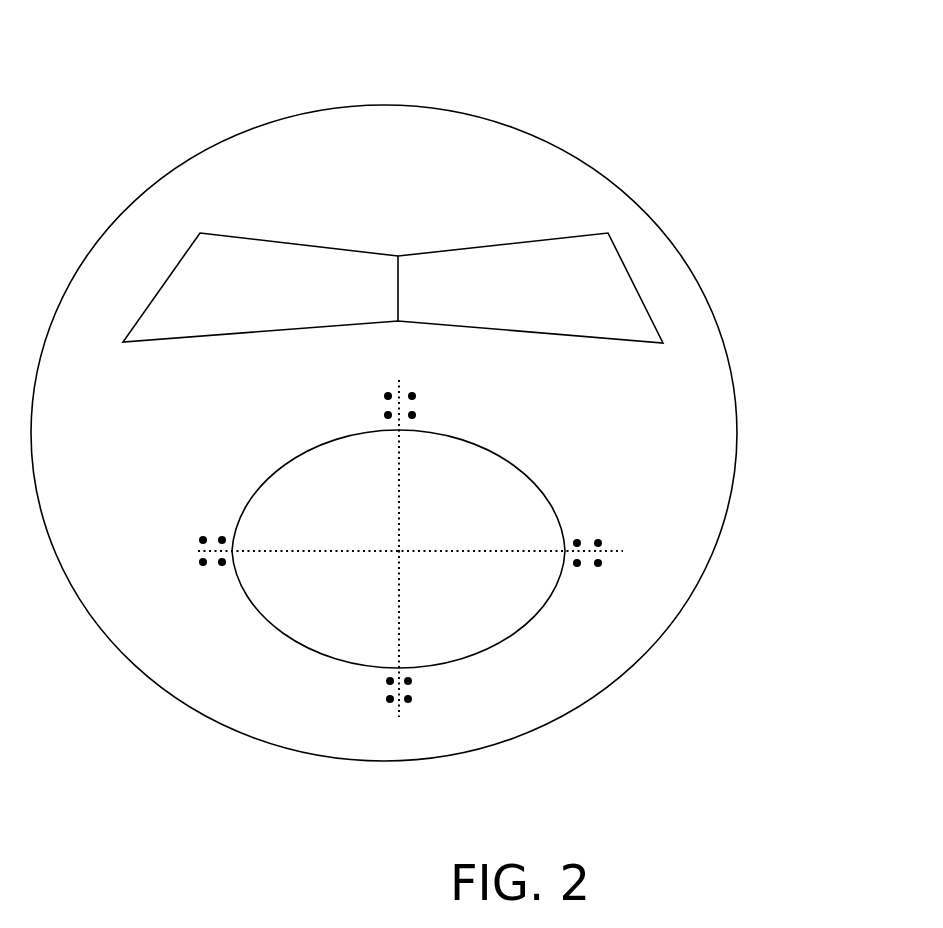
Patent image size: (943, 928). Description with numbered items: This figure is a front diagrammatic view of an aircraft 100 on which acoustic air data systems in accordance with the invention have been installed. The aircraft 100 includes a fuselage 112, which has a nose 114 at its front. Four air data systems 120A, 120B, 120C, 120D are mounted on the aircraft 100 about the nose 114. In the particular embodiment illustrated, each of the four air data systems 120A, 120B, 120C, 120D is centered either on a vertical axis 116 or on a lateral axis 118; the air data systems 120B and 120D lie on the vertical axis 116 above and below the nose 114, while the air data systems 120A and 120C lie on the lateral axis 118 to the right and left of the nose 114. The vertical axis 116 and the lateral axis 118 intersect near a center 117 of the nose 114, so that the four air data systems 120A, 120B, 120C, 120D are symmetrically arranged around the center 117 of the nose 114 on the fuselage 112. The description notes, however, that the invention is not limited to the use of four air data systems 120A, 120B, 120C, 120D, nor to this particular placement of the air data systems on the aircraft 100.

The aircraft 100 is at (698, 92).
The fuselage 112 is at (677, 253).
The nose 114 is at (503, 645).
The vertical axis 116 is at (398, 657).
The center 117 is at (401, 551).
The lateral axis 118 is at (368, 550).
The air data system 120A is at (586, 538).
The air data system 120B is at (407, 385).
The air data system 120C is at (213, 536).
The air data system 120D is at (412, 690).